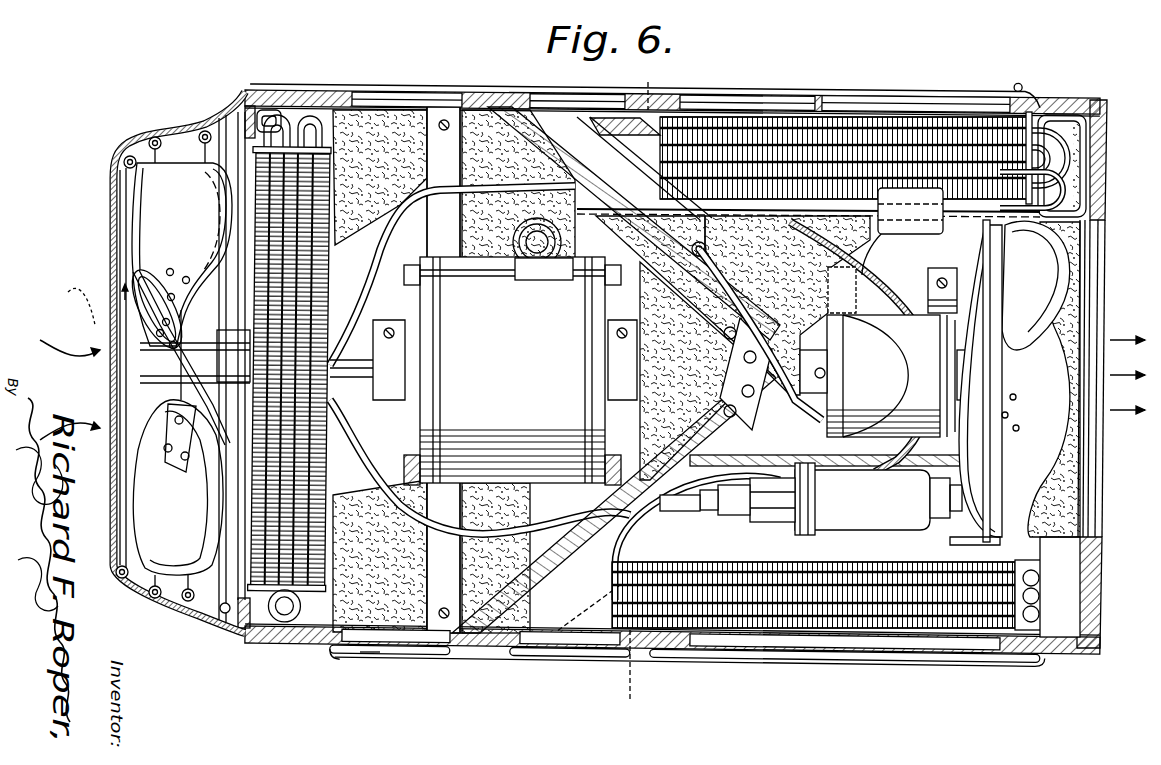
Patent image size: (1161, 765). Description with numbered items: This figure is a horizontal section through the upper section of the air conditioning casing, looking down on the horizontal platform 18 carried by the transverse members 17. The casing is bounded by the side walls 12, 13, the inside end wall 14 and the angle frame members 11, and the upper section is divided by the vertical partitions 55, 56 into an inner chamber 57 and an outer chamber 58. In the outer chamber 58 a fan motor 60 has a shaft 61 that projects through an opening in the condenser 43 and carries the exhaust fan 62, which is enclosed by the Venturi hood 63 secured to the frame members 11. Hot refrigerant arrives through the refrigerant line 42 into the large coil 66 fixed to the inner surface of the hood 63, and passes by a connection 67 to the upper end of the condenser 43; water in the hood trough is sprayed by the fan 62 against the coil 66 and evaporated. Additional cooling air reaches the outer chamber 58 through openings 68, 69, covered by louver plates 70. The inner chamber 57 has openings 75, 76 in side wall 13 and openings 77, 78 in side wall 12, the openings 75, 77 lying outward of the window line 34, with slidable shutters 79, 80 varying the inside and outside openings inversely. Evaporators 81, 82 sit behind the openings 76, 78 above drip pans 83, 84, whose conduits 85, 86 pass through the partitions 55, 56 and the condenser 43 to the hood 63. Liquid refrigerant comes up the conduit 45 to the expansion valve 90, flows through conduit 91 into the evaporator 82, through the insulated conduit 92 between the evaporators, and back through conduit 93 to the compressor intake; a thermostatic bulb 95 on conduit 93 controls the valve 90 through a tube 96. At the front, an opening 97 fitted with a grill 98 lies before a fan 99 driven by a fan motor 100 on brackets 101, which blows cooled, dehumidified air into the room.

The angle frame members 11 is at (268, 89).
The side wall 12 is at (660, 658).
The side wall 13 is at (686, 88).
The inside end wall 14 is at (1095, 575).
The transverse members 17 is at (440, 165).
The horizontal platform 18 is at (486, 254).
The window line 34 is at (650, 92).
The refrigerant line 42 is at (120, 272).
The condenser 43 is at (325, 280).
The conduit 45 is at (575, 613).
The vertical partition 55 is at (634, 223).
The vertical partition 56 is at (746, 384).
The inner chamber 57 is at (787, 305).
The outer chamber 58 is at (700, 371).
The fan motor 60 is at (510, 456).
The shaft 61 is at (368, 348).
The exhaust fan 62 is at (152, 212).
The Venturi hood 63 is at (157, 130).
The coil 66 is at (192, 134).
The connection 67 is at (285, 120).
The opening 68 is at (405, 89).
The opening 69 is at (380, 652).
The louver plates 70 is at (440, 90).
The opening 75 is at (550, 94).
The opening 76 is at (850, 91).
The opening 77 is at (608, 650).
The opening 78 is at (953, 632).
The shutter 79 is at (773, 92).
The shutter 80 is at (760, 653).
The evaporator 81 is at (1005, 140).
The evaporator 82 is at (960, 600).
The drip pan 83 is at (1072, 180).
The drip pan 84 is at (1054, 379).
The conduit 85 is at (402, 218).
The conduit 86 is at (395, 520).
The expansion valve 90 is at (865, 515).
The conduit 91 is at (725, 512).
The insulated conduit 92 is at (812, 236).
The conduit 93 is at (1110, 199).
The thermostatic bulb 95 is at (920, 234).
The tube 96 is at (985, 462).
The opening 97 is at (1093, 318).
The grill 98 is at (1090, 462).
The fan 99 is at (1045, 268).
The fan motor 100 is at (857, 350).
The brackets 101 is at (930, 300).